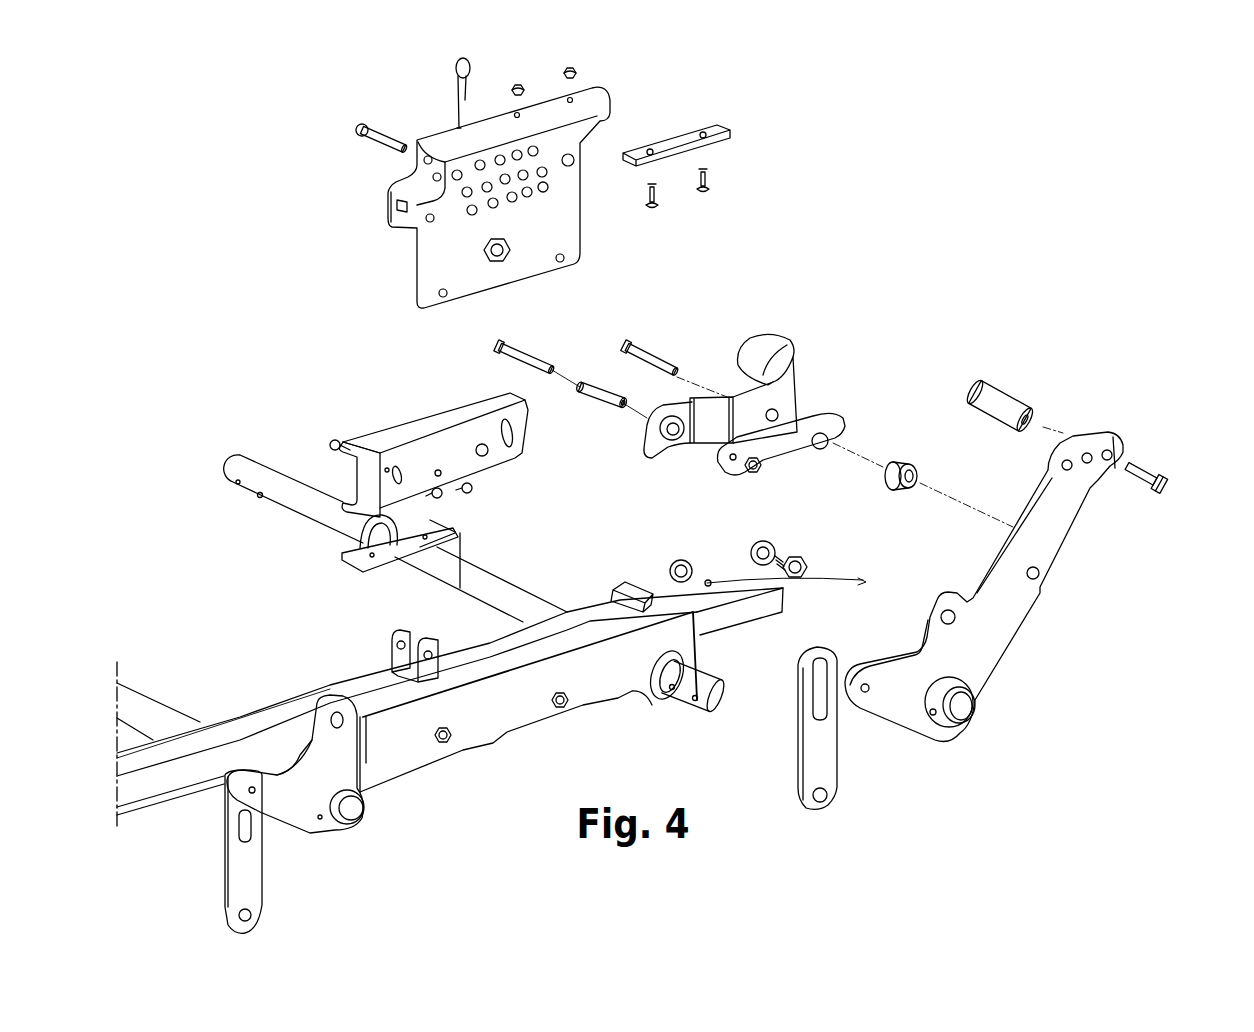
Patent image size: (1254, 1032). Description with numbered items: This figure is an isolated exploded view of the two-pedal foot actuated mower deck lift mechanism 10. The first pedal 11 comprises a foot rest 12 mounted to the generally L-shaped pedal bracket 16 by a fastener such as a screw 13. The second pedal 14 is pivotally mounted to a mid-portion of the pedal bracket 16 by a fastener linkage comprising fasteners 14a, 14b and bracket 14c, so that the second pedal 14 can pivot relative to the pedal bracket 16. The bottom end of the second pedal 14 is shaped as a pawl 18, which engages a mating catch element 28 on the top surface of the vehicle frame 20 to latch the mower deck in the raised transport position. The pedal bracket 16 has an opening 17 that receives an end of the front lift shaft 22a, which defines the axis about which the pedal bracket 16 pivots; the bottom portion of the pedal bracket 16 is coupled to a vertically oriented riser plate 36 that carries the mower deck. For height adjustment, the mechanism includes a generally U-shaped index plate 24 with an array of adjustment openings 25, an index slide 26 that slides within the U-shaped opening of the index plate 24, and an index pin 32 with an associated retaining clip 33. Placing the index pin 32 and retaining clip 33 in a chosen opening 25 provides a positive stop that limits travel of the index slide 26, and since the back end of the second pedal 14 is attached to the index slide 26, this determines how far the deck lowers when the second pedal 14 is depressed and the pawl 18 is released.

The mower deck lift mechanism 10 is at (885, 154).
The first pedal 11 is at (1098, 412).
The foot rest 12 is at (1003, 388).
The screw 13 is at (1165, 478).
The second pedal 14 is at (765, 348).
The fasteners 14a is at (537, 352).
The fasteners 14b is at (590, 402).
The bracket 14c is at (843, 401).
The pedal bracket 16 is at (1033, 543).
The opening 17 is at (960, 714).
The pawl 18 is at (648, 457).
The vehicle frame 20 is at (233, 723).
The front lift shaft 22a is at (718, 712).
The index plate 24 is at (597, 92).
The adjustment openings 25 is at (548, 193).
The index slide 26 is at (422, 423).
The catch element 28 is at (620, 585).
The index pin 32 is at (385, 133).
The retaining clip 33 is at (457, 64).
The riser plate 36 is at (840, 763).